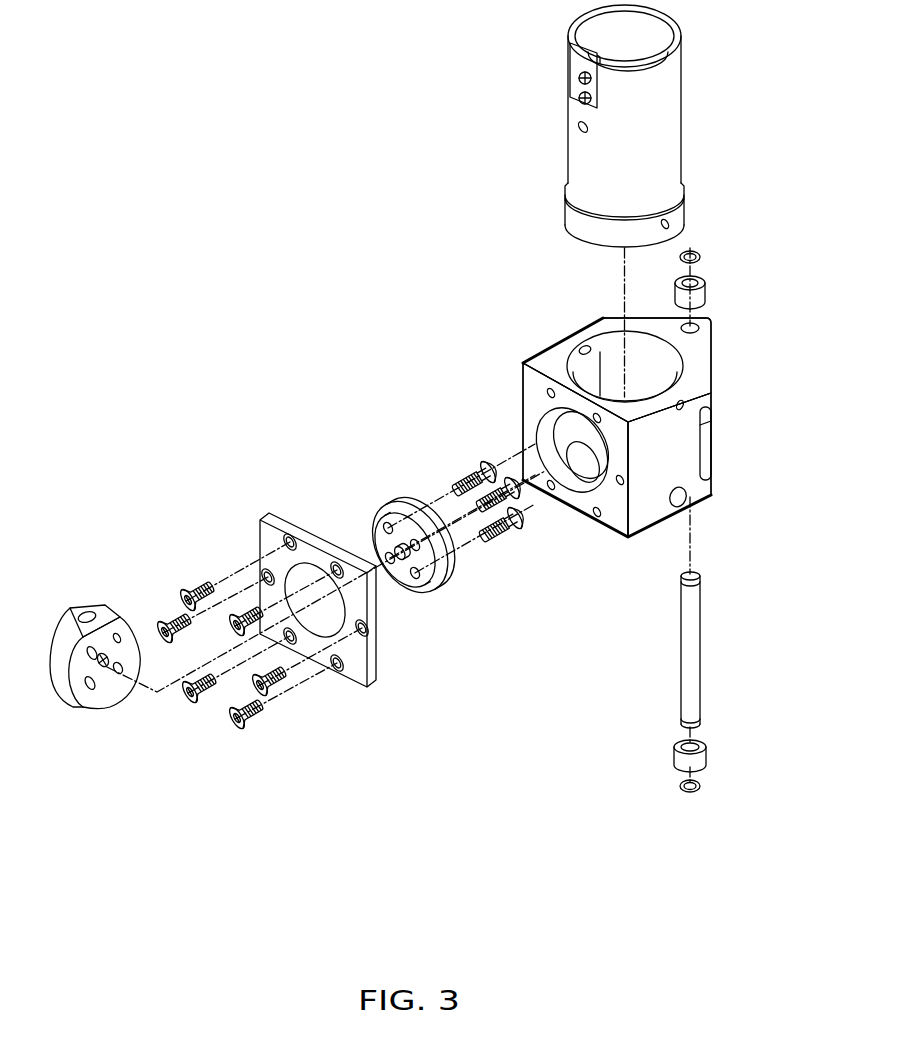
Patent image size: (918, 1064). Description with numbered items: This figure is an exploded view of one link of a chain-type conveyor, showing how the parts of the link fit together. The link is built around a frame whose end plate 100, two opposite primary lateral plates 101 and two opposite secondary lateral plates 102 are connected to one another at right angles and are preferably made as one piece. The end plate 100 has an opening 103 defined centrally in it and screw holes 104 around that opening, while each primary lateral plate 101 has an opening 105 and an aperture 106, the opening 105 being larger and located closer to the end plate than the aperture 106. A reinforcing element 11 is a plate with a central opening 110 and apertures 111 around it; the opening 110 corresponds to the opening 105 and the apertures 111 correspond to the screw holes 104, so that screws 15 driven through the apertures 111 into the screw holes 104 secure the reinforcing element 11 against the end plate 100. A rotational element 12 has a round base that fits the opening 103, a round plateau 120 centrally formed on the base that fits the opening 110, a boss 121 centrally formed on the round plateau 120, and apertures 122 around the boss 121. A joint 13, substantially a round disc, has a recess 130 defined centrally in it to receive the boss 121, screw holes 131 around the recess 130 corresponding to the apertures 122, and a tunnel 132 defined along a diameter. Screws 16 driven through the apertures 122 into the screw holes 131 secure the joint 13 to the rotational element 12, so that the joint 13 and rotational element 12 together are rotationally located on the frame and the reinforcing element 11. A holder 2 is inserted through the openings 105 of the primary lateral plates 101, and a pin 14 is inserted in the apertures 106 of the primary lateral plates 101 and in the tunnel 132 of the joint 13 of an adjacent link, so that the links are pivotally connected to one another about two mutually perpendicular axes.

The holder 2 is at (673, 134).
The end plate 100 is at (617, 517).
The primary lateral plates 101 is at (696, 359).
The secondary lateral plates 102 is at (694, 491).
The opening 103 is at (546, 413).
The screw holes 104 is at (540, 379).
The opening 105 is at (597, 344).
The aperture 106 is at (698, 323).
The reinforcing element 11 is at (266, 544).
The opening 110 is at (333, 612).
The apertures 111 is at (290, 538).
The rotational element 12 is at (404, 496).
The round plateau 120 is at (419, 563).
The boss 121 is at (397, 566).
The apertures 122 is at (388, 522).
The joint 13 is at (64, 688).
The recess 130 is at (104, 668).
The screw holes 131 is at (119, 633).
The tunnel 132 is at (87, 611).
The pin 14 is at (694, 629).
The screws 15 is at (246, 722).
The screws 16 is at (512, 530).